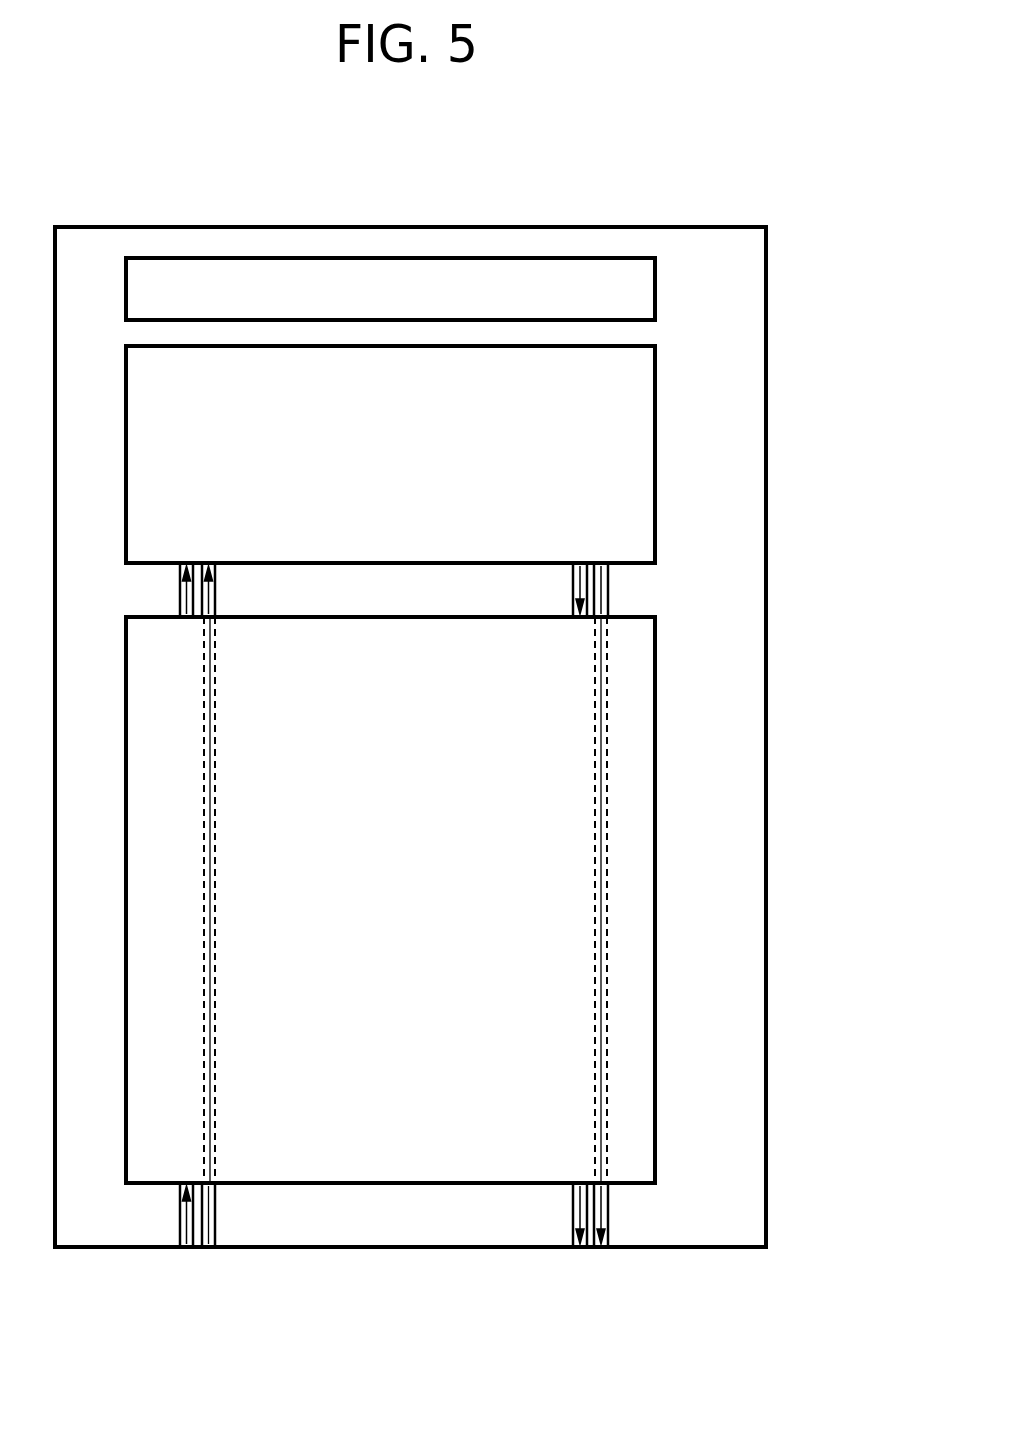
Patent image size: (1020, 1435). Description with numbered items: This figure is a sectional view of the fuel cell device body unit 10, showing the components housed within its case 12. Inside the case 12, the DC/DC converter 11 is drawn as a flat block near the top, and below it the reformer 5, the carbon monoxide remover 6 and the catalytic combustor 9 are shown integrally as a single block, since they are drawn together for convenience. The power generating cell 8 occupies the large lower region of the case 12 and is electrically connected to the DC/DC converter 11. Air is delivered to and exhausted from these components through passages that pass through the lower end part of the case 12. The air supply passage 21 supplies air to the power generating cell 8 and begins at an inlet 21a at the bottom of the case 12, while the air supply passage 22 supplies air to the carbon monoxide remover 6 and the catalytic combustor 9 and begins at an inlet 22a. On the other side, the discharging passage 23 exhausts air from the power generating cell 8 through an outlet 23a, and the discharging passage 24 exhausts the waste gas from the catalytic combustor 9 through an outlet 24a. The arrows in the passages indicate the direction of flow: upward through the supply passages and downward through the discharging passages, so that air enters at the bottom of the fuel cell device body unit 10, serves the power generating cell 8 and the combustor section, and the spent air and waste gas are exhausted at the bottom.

The fuel cell device body unit 10 is at (433, 166).
The DC/DC converter 11 is at (657, 286).
The case 12 is at (767, 562).
The reformer 5 is at (502, 454).
The carbon monoxide remover 6 is at (502, 454).
The catalytic combustor 9 is at (657, 447).
The power generating cell 8 is at (656, 755).
The air supply passage 21 is at (180, 1214).
The air supply passage 22 is at (215, 1220).
The discharging passage 23 is at (573, 1207).
The discharging passage 24 is at (608, 1208).
The inlet 21a is at (188, 1249).
The inlet 22a is at (208, 1249).
The outlet 23a is at (580, 1249).
The outlet 24a is at (601, 1249).